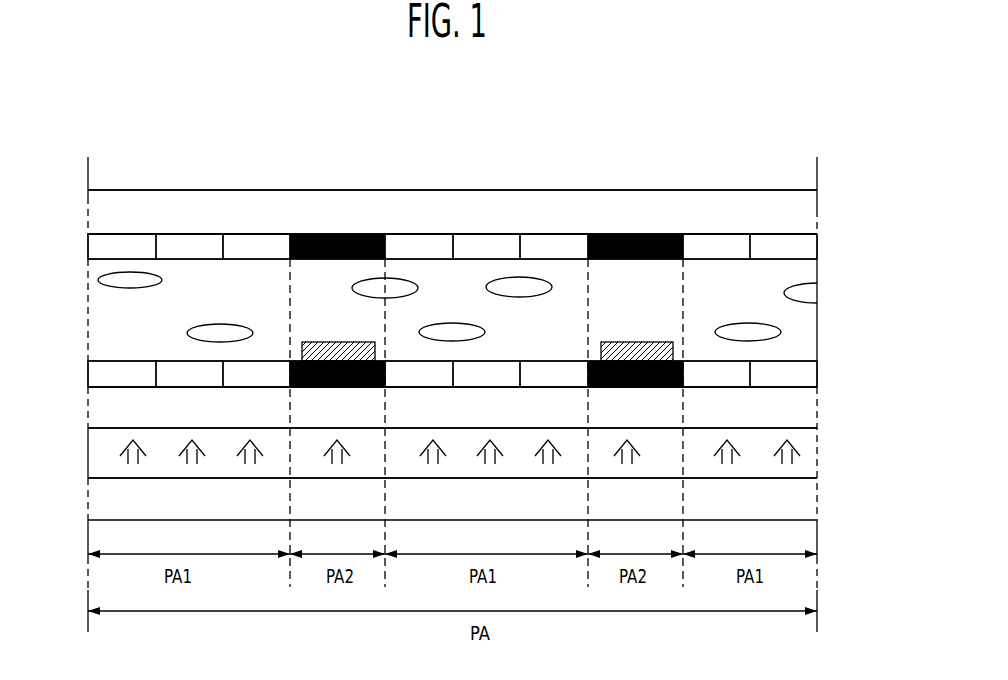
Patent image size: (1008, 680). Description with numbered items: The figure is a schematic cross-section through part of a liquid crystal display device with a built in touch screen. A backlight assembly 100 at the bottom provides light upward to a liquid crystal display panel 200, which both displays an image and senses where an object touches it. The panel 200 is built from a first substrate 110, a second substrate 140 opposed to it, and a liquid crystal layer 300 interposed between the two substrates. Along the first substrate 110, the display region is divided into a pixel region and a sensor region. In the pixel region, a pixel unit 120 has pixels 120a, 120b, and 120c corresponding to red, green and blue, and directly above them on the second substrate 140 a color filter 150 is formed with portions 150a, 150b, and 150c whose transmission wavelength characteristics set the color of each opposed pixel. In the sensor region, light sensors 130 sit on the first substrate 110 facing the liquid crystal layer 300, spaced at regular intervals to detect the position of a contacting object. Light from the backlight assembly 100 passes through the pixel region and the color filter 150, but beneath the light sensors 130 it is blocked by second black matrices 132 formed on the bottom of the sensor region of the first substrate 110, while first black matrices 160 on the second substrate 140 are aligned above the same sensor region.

The backlight assembly 100 is at (802, 497).
The first substrate 110 is at (107, 405).
The pixel unit 120 is at (278, 300).
The pixel 120a is at (138, 367).
The pixel 120b is at (205, 370).
The pixel 120c is at (275, 370).
The light sensor 130 is at (640, 342).
The second black matrix 132 is at (653, 387).
The second substrate 140 is at (802, 210).
The color filter 150 is at (307, 142).
The color filter 150a is at (133, 234).
The color filter 150b is at (192, 234).
The color filter 150c is at (258, 234).
The first black matrix 160 is at (623, 234).
The liquid crystal display panel 200 is at (78, 193).
The liquid crystal layer 300 is at (797, 277).